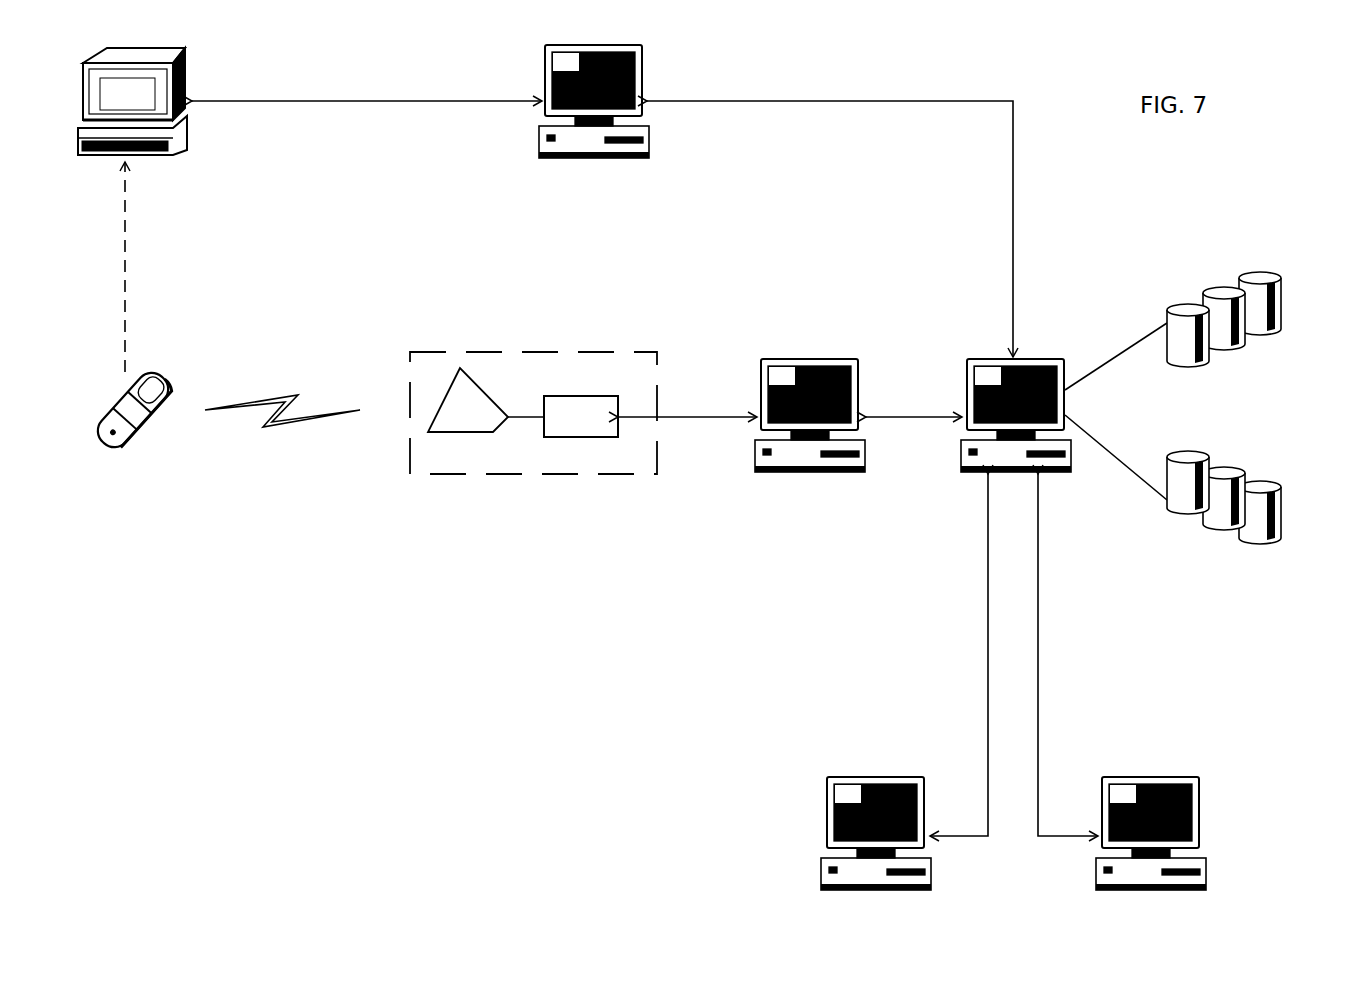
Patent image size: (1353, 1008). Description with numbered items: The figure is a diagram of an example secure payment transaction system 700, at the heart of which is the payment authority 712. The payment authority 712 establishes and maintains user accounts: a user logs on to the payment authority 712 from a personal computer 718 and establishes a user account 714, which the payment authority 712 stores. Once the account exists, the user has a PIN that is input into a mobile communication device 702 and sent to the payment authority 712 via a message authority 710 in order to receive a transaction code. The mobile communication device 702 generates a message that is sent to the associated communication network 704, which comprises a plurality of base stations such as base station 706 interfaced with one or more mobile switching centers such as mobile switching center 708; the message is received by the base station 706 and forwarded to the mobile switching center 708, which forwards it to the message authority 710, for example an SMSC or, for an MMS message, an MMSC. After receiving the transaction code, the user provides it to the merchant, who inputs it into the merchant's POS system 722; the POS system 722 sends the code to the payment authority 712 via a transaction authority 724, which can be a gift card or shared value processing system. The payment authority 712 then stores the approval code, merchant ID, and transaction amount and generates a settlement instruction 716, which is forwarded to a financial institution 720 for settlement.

The secure payment transaction system 700 is at (522, 663).
The mobile communication device 702 is at (168, 383).
The communication network 704 is at (630, 350).
The base station 706 is at (482, 387).
The mobile switching center 708 is at (580, 395).
The message authority 710 is at (810, 358).
The payment authority 712 is at (1038, 358).
The user account 714 is at (1230, 365).
The settlement instruction 716 is at (1230, 470).
The personal computer 718 is at (877, 775).
The financial institution 720 is at (1150, 775).
The POS system 722 is at (198, 65).
The transaction authority 724 is at (650, 63).